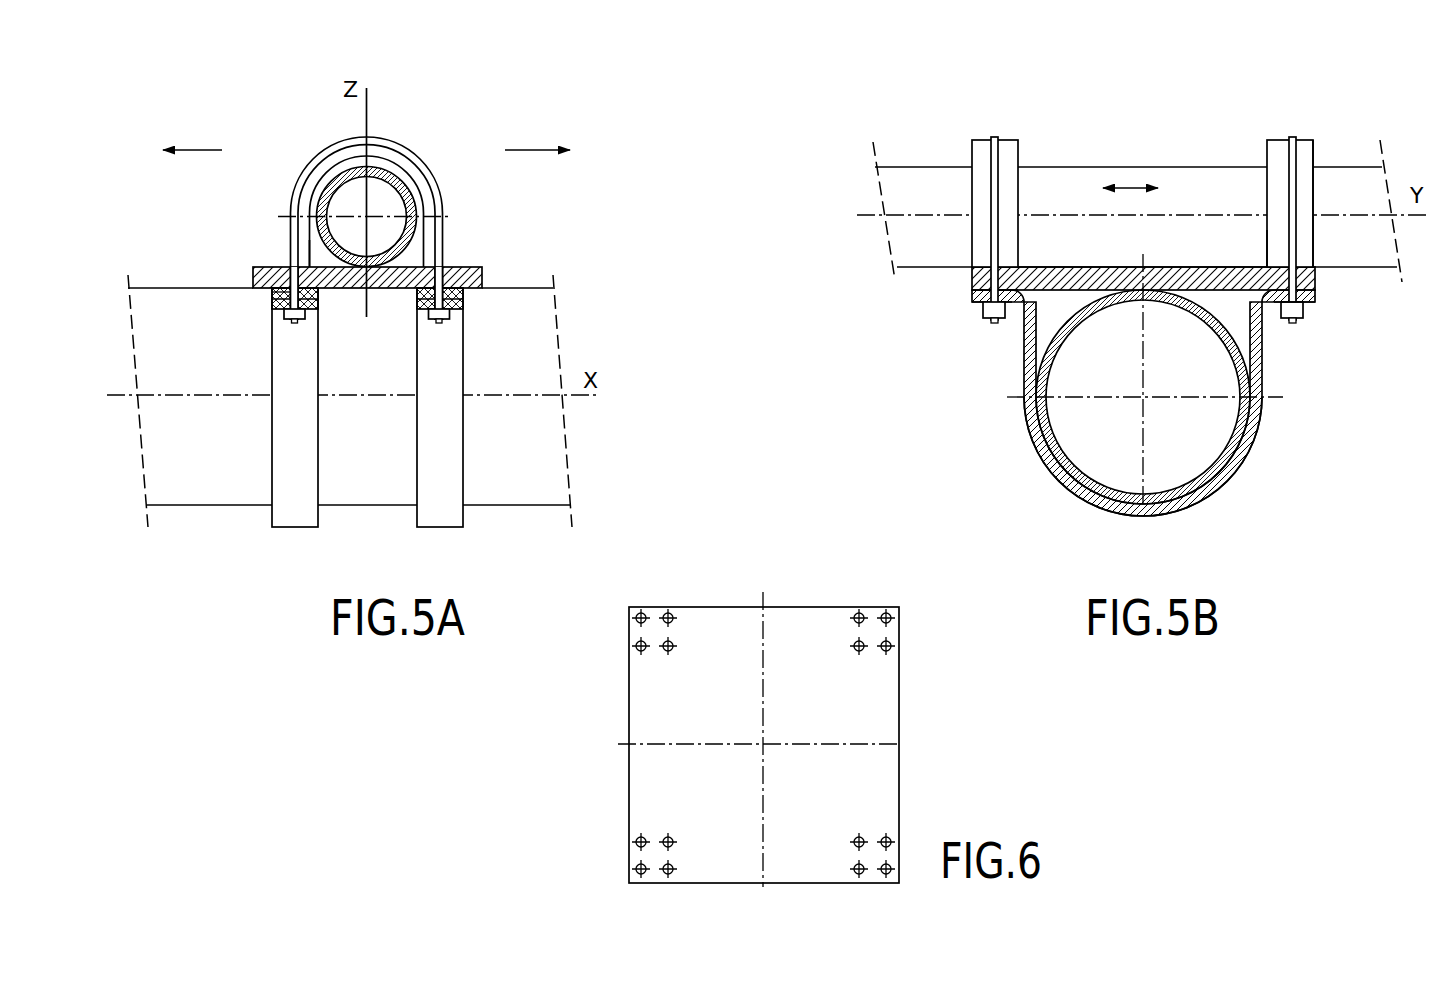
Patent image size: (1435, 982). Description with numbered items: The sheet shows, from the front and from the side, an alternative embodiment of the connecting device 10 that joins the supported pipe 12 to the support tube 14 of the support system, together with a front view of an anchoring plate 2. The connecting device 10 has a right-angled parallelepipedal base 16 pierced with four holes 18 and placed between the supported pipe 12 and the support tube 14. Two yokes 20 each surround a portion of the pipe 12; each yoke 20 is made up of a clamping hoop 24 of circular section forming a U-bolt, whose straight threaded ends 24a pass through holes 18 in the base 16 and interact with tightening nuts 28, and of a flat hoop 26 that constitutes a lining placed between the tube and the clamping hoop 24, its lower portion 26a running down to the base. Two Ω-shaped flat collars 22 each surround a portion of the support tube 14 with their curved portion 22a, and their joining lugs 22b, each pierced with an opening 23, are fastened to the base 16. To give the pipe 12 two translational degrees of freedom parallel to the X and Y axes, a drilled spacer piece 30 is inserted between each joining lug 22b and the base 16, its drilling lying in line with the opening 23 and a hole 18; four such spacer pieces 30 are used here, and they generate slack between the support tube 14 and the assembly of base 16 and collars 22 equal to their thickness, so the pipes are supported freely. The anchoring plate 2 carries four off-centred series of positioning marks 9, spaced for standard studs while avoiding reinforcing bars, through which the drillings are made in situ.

In FIG. 6, the anchoring plate 2 is at (782, 600).
In FIG. 6, the positioning marks 9 is at (630, 646).
In FIG. 5A, the connecting device 10 is at (300, 140).
In FIG. 5A, the supported pipe 12 is at (402, 183).
In FIG. 5B, the supported pipe 12 is at (1117, 165).
In FIG. 5A, the support tube 14 is at (488, 497).
In FIG. 5B, the support tube 14 is at (1100, 478).
In FIG. 5A, the base 16 is at (247, 257).
In FIG. 5A, the holes 18 is at (445, 269).
In FIG. 5B, the holes 18 is at (973, 273).
In FIG. 5B, the yoke 20 is at (970, 133).
In FIG. 5A, the flat collar 22 is at (287, 533).
In FIG. 5B, the flat collar 22 is at (1258, 463).
In FIG. 5B, the curved saddle portion 22a is at (1042, 468).
In FIG. 5A, the joining lug 22b is at (460, 297).
In FIG. 5B, the joining lug 22b is at (1013, 310).
In FIG. 5B, the opening 23 is at (985, 303).
In FIG. 5A, the clamping hoop 24 is at (369, 138).
In FIG. 5B, the clamping hoop 24 is at (1292, 137).
In FIG. 5A, the threaded ends 24a is at (313, 307).
In FIG. 5B, the threaded ends 24a is at (1305, 298).
In FIG. 5A, the flat hoop 26 is at (310, 182).
In FIG. 5B, the flat hoop 26 is at (1302, 159).
In FIG. 5A, the liner end portion 26a is at (302, 248).
In FIG. 5B, the liner end portion 26a is at (1283, 258).
In FIG. 5B, the tightening nuts 28 is at (1302, 323).
In FIG. 5A, the drilled spacer piece 30 is at (272, 295).
In FIG. 5B, the drilled spacer piece 30 is at (973, 293).